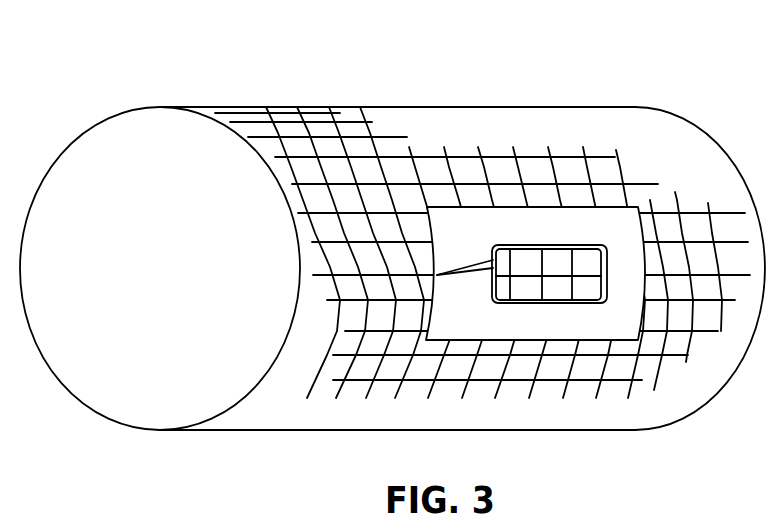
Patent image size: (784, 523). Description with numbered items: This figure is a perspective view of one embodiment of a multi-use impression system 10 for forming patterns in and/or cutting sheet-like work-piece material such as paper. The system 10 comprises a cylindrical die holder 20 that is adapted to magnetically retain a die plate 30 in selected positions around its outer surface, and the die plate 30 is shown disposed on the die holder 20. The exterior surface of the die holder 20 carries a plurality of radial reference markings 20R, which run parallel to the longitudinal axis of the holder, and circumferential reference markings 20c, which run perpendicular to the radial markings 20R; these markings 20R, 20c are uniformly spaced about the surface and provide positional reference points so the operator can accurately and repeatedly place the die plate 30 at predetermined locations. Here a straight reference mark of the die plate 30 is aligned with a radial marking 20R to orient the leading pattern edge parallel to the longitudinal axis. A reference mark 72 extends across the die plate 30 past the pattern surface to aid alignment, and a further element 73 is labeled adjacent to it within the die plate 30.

The multi-use impression system 10 is at (636, 62).
The die holder 20 is at (90, 130).
The radial reference markings 20R is at (350, 166).
The circumferential reference markings 20c is at (481, 157).
The die plate 30 is at (634, 198).
The reference mark 72 is at (477, 265).
The inflator mounting flange 73 is at (467, 278).